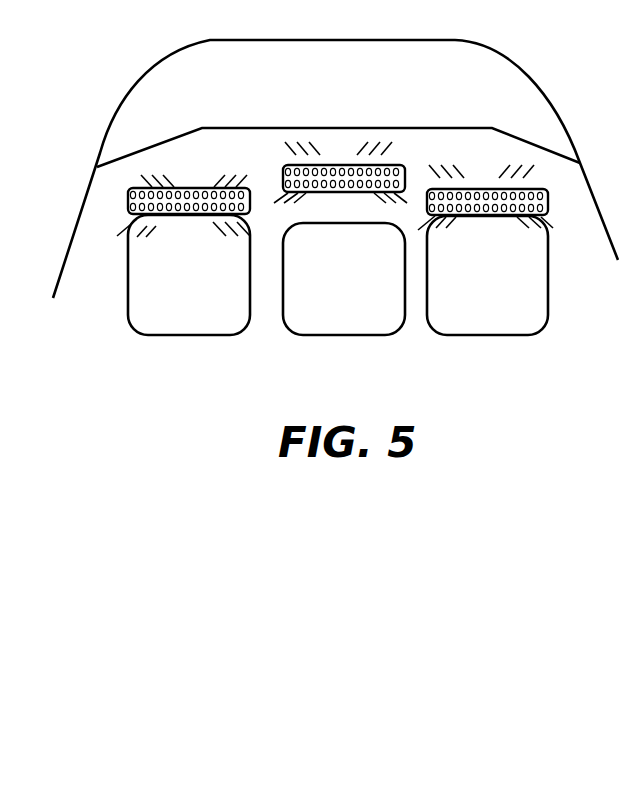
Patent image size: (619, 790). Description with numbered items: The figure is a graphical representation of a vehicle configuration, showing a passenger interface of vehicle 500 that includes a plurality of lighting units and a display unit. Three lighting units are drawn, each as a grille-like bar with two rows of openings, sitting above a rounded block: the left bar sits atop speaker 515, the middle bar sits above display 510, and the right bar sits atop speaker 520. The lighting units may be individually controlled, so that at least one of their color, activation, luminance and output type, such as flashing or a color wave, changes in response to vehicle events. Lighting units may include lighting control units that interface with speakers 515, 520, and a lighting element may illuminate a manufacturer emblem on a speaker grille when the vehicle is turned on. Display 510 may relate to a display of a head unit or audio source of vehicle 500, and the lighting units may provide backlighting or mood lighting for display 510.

The vehicle 500 is at (70, 85).
The display unit 510 is at (343, 335).
The speaker 515 is at (188, 320).
The speaker 520 is at (500, 320).